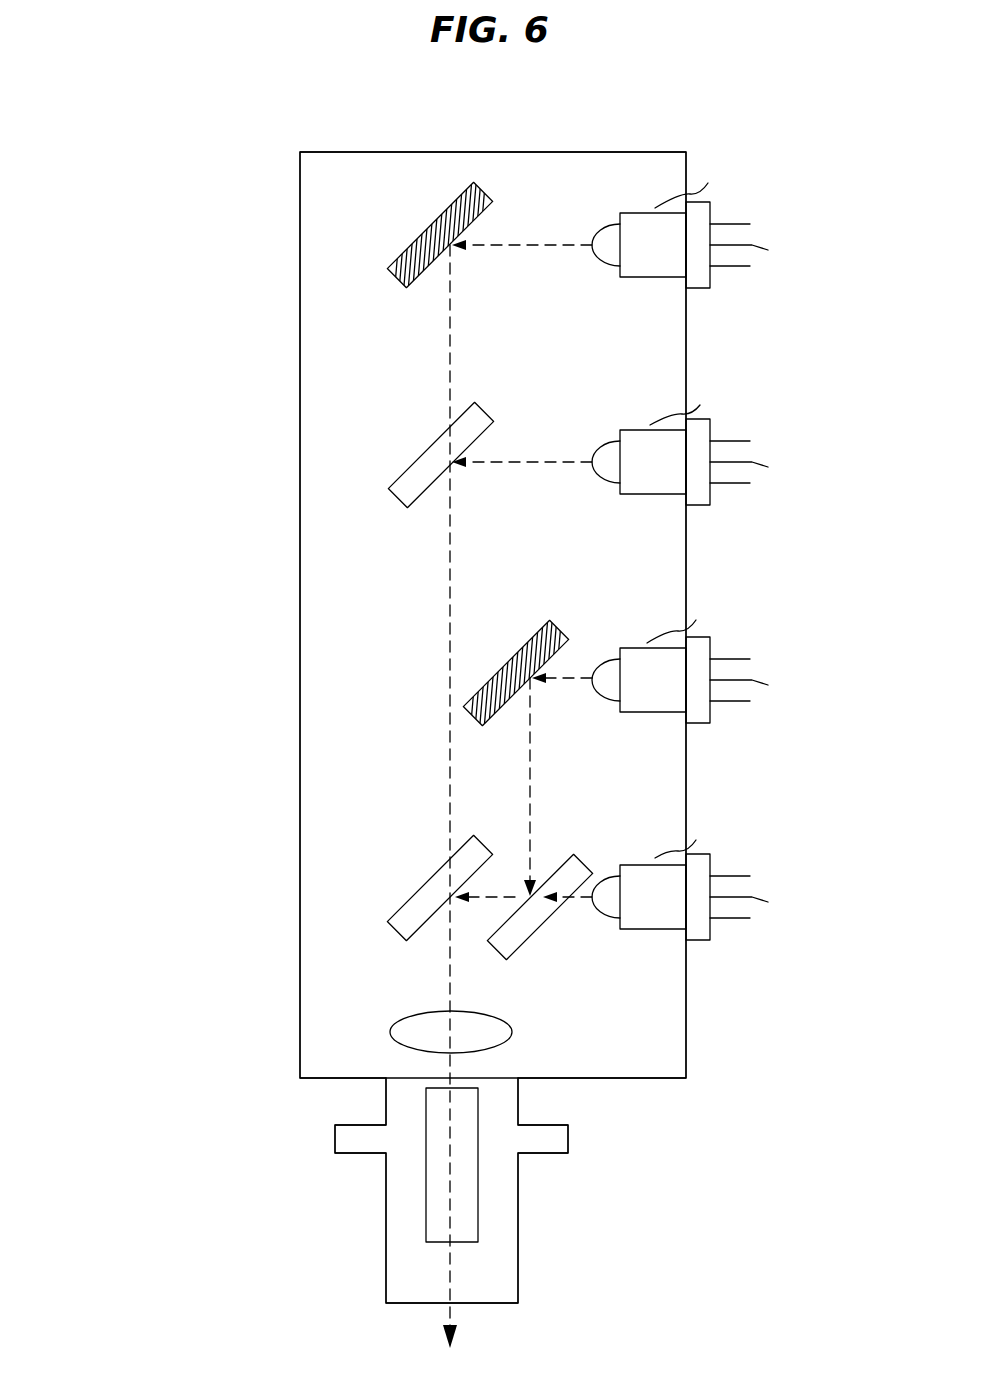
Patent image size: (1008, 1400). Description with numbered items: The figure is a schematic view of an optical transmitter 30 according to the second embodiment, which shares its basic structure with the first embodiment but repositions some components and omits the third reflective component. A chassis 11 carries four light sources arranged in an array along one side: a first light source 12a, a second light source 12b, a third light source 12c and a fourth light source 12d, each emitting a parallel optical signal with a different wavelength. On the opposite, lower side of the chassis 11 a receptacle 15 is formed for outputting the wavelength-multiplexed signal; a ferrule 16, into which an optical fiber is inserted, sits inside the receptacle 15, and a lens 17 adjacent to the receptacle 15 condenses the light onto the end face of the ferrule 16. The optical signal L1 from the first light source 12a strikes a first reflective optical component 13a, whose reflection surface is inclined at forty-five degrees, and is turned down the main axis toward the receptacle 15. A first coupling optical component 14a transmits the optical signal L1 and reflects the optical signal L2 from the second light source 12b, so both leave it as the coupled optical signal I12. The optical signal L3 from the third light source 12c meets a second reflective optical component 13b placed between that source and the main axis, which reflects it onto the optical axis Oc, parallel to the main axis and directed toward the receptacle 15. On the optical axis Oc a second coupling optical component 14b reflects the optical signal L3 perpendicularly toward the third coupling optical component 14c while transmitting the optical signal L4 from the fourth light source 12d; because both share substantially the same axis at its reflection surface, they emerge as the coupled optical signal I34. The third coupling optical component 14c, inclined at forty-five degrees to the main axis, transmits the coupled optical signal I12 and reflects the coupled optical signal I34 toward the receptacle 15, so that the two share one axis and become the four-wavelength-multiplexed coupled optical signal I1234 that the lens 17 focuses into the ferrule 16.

The optical transmitter 30 is at (268, 202).
The chassis 11 is at (318, 355).
The first light source 12a is at (700, 277).
The second light source 12b is at (702, 495).
The third light source 12c is at (702, 712).
The fourth light source 12d is at (702, 930).
The first reflective optical component 13a is at (490, 188).
The second reflective optical component 13b is at (550, 622).
The first coupling optical component 14a is at (422, 475).
The second coupling optical component 14b is at (508, 942).
The third coupling optical component 14c is at (415, 905).
The receptacle 15 is at (374, 1192).
The ferrule 16 is at (465, 1180).
The lens 17 is at (502, 1035).
The optical signal L1 is at (505, 247).
The optical signal L2 is at (538, 460).
The optical signal L3 is at (530, 705).
The optical signal L4 is at (582, 898).
The coupled optical signal I12 is at (450, 562).
The coupled optical signal I34 is at (512, 896).
The coupled optical signal I1234 is at (450, 960).
The optical axis Oc is at (520, 775).